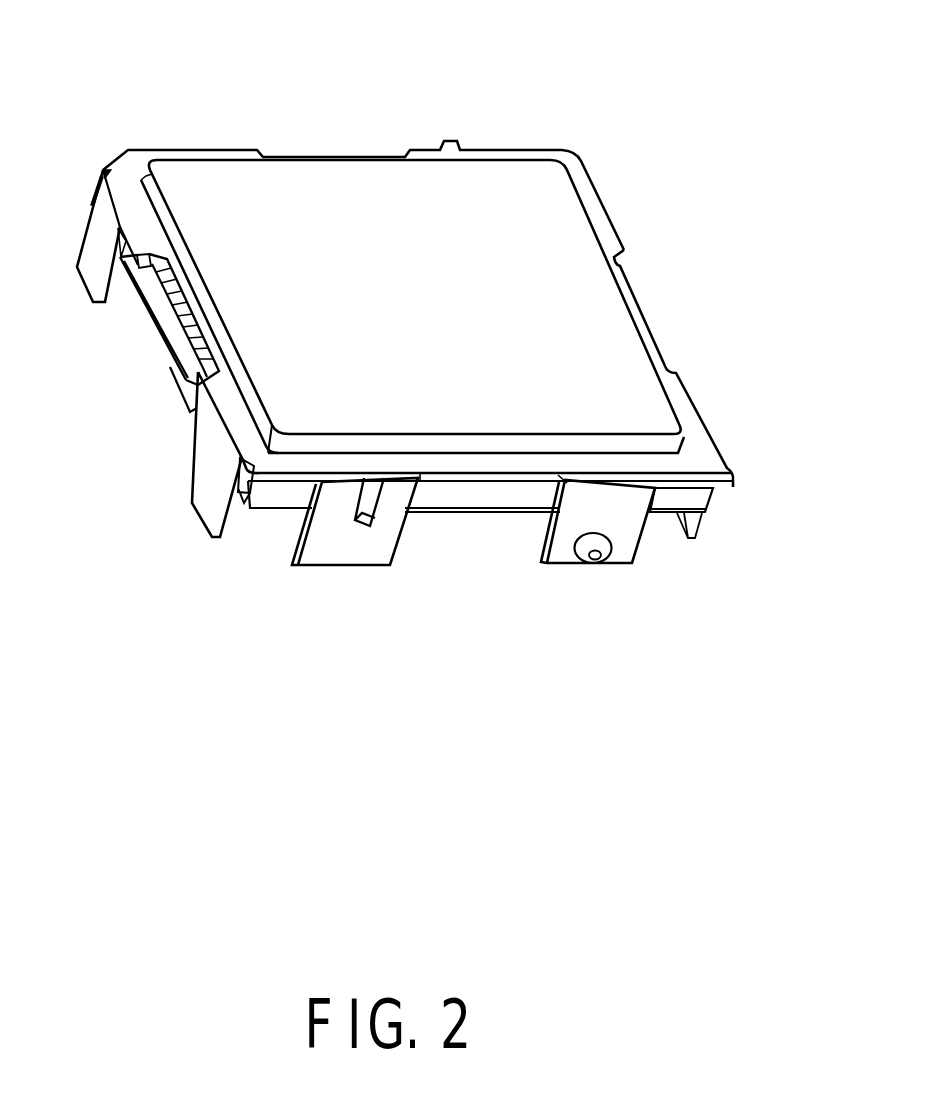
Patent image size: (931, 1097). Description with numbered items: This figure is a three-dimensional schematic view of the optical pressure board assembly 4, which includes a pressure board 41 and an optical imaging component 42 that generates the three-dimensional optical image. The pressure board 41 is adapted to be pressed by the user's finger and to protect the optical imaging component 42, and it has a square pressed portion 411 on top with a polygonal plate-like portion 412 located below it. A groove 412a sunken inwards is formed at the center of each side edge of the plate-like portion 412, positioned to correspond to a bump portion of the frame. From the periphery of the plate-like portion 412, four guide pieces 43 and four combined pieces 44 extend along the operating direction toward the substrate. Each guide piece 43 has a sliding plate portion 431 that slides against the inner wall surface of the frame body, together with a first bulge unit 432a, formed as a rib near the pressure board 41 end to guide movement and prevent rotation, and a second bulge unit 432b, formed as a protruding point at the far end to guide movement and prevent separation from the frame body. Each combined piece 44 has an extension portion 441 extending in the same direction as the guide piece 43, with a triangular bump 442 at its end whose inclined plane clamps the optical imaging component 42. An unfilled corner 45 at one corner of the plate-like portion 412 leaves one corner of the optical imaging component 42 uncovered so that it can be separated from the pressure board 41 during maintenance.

The optical pressure board assembly 4 is at (50, 34).
The pressure board 41 is at (698, 137).
The pressed portion 411 is at (563, 172).
The plate-like portion 412 is at (592, 209).
The groove 412a is at (656, 317).
The optical imaging component 42 is at (172, 340).
The guide piece 43 is at (443, 642).
The sliding plate portion 431 is at (348, 553).
The first bulge unit 432a is at (370, 510).
The second bulge unit 432b is at (584, 557).
The combined piece 44 is at (268, 612).
The extension portion 441 is at (207, 503).
The triangular bump 442 is at (228, 512).
The unfilled corner 45 is at (105, 153).